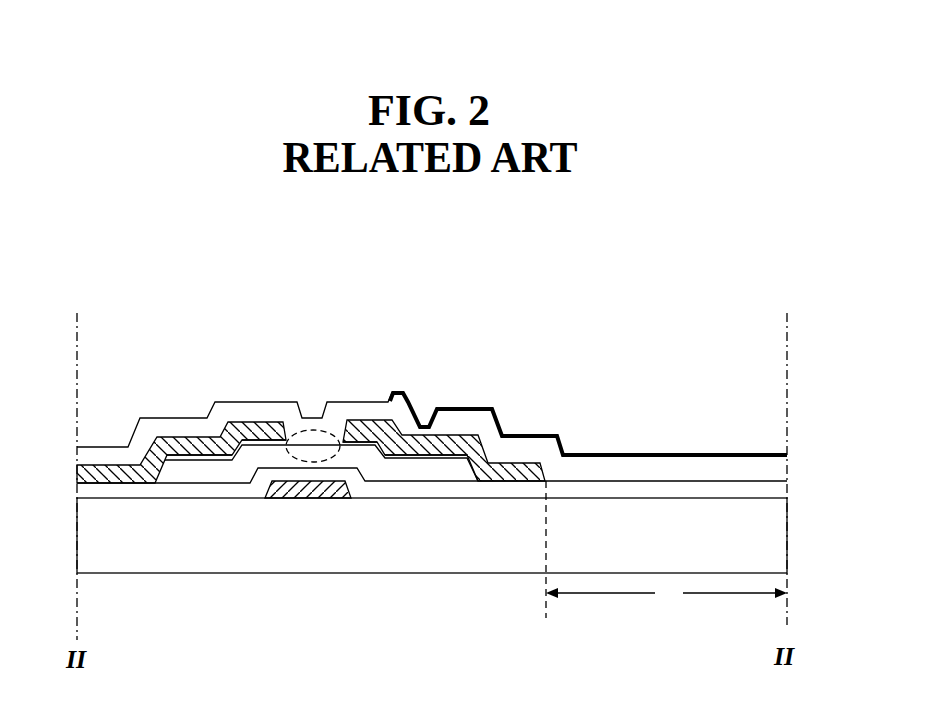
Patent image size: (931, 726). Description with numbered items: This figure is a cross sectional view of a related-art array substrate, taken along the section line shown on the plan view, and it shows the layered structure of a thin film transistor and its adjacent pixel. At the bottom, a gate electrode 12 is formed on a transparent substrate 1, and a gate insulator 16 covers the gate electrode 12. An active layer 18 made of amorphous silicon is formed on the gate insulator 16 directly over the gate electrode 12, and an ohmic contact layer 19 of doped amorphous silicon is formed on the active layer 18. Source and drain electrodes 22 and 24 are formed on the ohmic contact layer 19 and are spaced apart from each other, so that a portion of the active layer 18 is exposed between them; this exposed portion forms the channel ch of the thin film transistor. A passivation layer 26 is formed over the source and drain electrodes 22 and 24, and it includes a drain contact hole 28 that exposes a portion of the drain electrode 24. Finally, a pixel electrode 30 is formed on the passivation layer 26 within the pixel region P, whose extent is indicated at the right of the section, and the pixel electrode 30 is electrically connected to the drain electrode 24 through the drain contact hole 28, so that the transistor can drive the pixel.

The transparent substrate 1 is at (657, 557).
The gate electrode 12 is at (289, 498).
The gate insulator 16 is at (684, 486).
The active layer 18 is at (402, 476).
The ohmic contact layer 19 is at (189, 460).
The source electrode 22 is at (263, 428).
The drain electrode 24 is at (370, 421).
The passivation layer 26 is at (110, 455).
The drain contact hole 28 is at (427, 398).
The pixel electrode 30 is at (762, 452).
The channel ch is at (313, 433).
The pixel region P is at (666, 549).